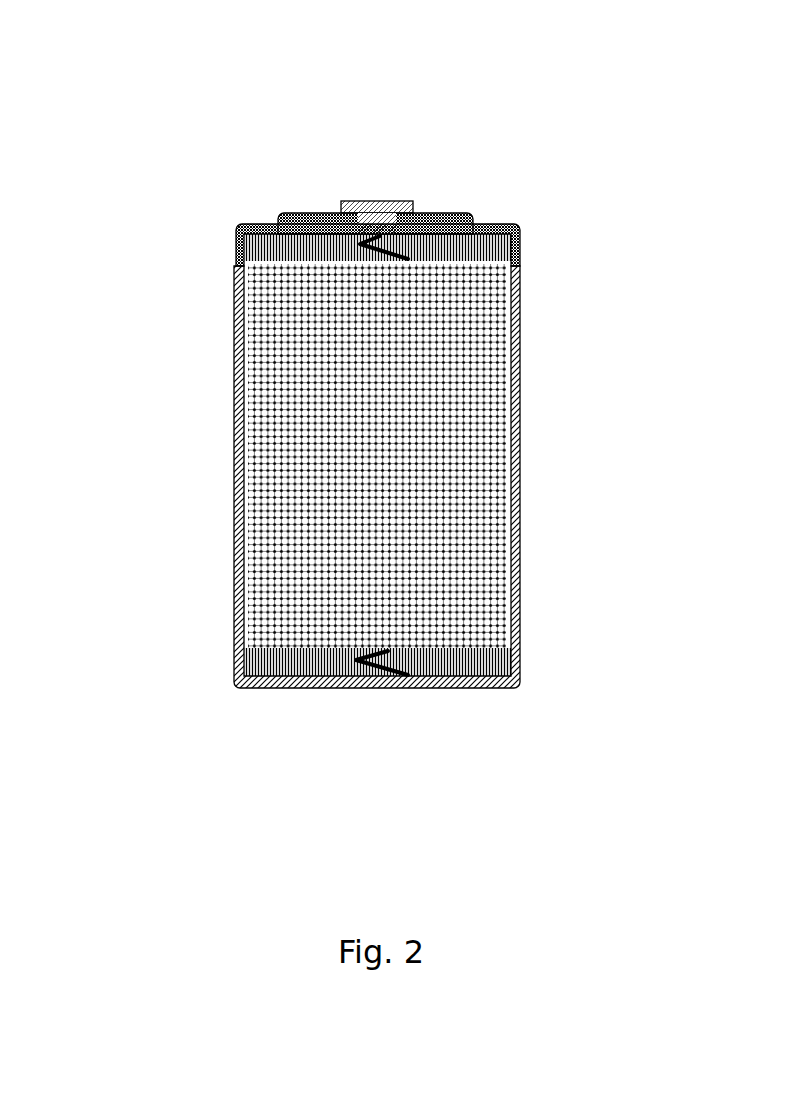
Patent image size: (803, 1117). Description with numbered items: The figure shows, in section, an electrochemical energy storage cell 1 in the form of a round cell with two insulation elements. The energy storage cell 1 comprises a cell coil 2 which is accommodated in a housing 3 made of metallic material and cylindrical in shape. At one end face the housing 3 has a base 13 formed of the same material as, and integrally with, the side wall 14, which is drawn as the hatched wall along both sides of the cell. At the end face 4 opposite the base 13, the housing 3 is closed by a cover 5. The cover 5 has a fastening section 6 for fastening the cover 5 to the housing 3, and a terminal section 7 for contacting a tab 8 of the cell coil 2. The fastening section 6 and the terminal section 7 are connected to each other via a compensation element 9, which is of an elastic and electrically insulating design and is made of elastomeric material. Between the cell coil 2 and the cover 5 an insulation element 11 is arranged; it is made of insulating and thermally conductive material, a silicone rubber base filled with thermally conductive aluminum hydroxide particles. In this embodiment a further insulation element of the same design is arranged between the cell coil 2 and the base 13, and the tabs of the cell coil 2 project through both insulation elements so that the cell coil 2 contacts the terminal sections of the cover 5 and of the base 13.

The electrochemical energy storage cell 1 is at (535, 145).
The cell coil 2 is at (443, 450).
The housing 3 is at (510, 510).
The end face 4 is at (304, 146).
The cover 5 is at (233, 215).
The fastening section 6 is at (507, 220).
The terminal section 7 is at (371, 200).
The tab 8 is at (350, 243).
The compensation element 9 is at (420, 205).
The insulation element 11 is at (442, 243).
The base 13 is at (422, 667).
The side wall 14 is at (228, 514).